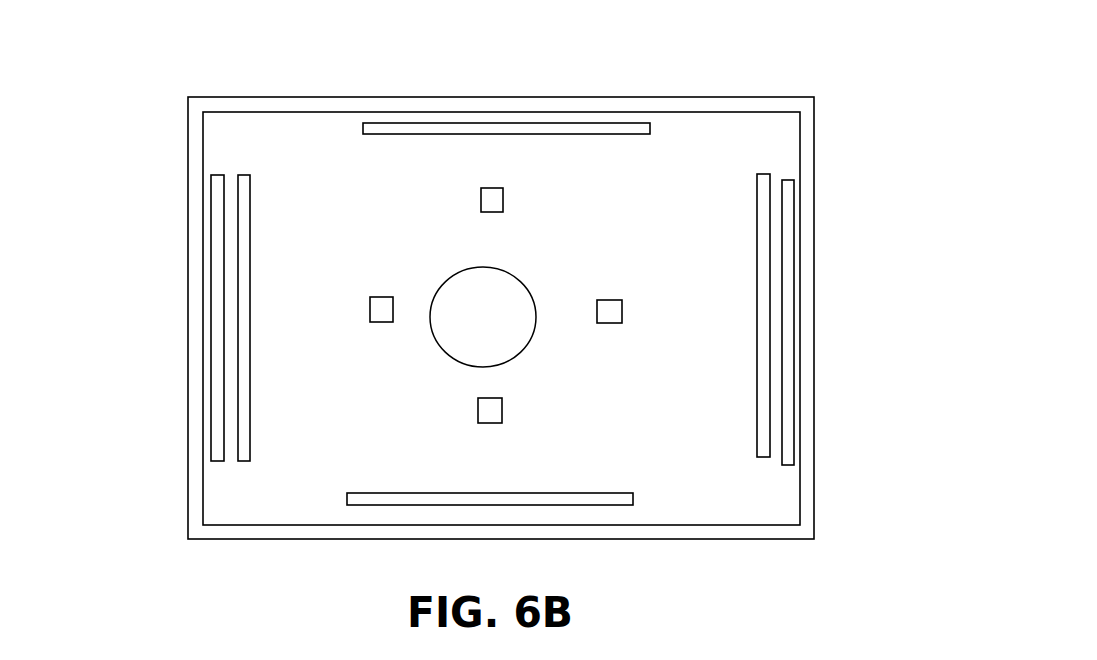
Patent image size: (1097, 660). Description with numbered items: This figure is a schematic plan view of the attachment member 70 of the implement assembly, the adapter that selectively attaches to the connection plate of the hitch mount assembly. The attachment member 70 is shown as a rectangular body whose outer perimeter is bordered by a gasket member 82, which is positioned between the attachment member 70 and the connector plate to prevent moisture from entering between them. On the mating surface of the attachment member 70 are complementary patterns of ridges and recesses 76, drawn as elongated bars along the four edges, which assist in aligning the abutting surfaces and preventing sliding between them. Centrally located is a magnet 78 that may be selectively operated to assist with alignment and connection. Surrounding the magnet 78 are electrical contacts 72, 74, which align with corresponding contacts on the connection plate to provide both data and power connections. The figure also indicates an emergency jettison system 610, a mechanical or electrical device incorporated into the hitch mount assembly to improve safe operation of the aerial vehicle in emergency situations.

The attachment member 70 is at (760, 137).
The gasket member 82 is at (807, 423).
The ridges and recesses 76 is at (498, 130).
The emergency jettison system 610 is at (213, 348).
The electrical contact 72 is at (492, 203).
The electrical contact 74 is at (602, 313).
The magnet 78 is at (497, 282).